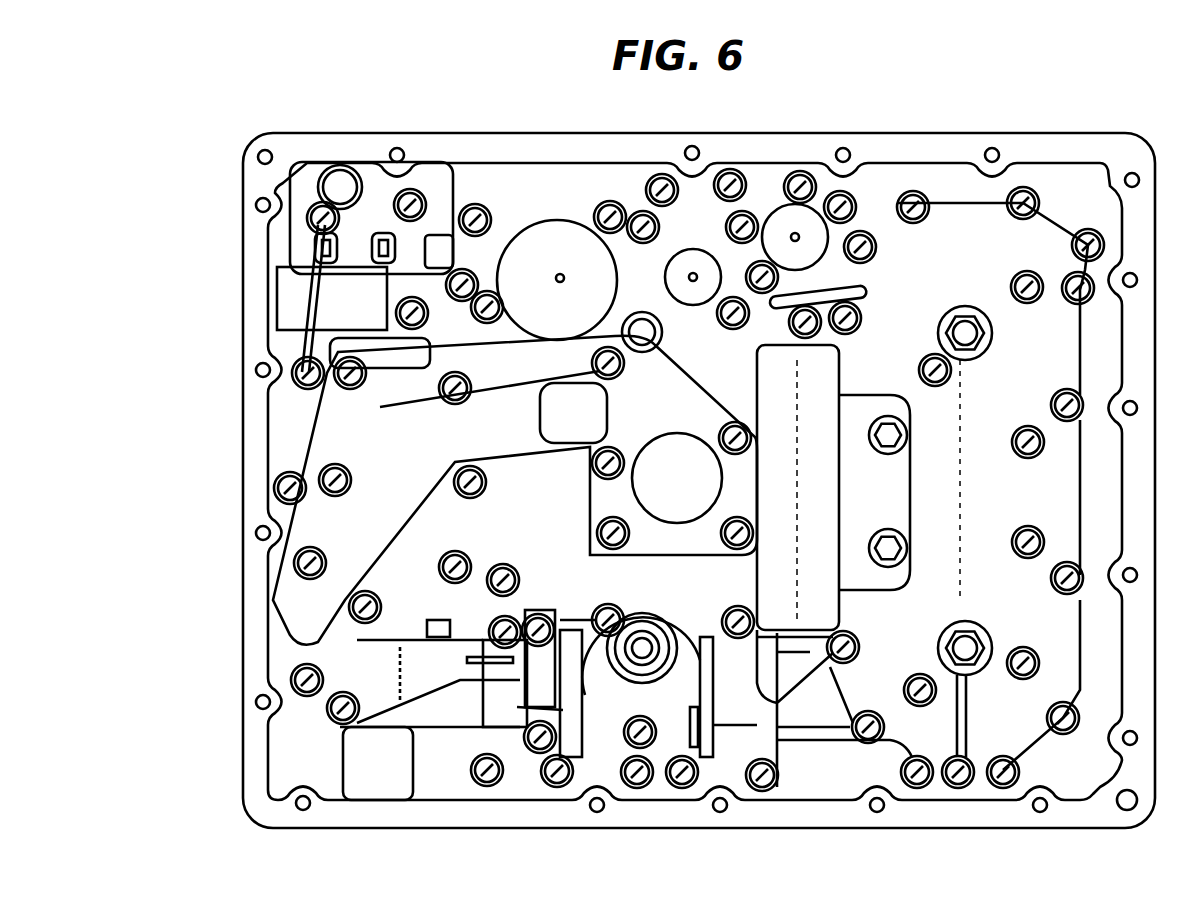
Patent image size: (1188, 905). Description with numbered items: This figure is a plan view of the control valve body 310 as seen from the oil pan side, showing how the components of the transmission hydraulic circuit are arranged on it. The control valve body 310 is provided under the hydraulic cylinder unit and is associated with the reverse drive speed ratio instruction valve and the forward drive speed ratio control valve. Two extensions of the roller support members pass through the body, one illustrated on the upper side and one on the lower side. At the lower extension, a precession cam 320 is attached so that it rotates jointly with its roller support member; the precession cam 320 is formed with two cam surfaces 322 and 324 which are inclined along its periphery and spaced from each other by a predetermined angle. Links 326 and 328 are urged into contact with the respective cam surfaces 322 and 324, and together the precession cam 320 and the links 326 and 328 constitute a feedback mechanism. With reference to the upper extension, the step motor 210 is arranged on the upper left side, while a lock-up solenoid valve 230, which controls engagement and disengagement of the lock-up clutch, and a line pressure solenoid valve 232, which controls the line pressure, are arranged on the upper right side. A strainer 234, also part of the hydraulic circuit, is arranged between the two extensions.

The control valve body 310 is at (275, 766).
The strainer 234 is at (373, 444).
The step motor 210 is at (539, 214).
The lock-up solenoid valve 230 is at (707, 197).
The line pressure solenoid valve 232 is at (768, 204).
The precession cam 320 is at (627, 744).
The cam surface 322 is at (467, 742).
The cam surface 324 is at (833, 610).
The link 326 is at (540, 747).
The link 328 is at (732, 756).